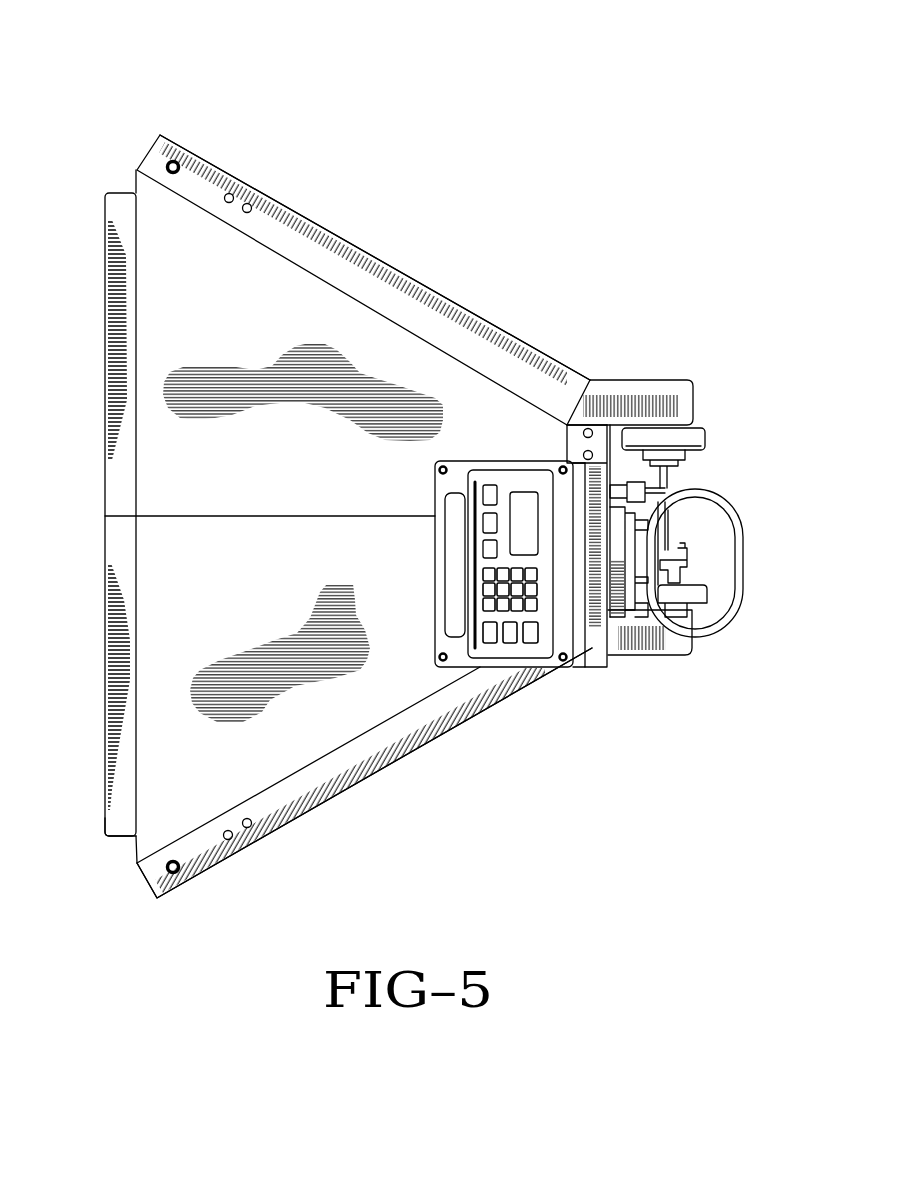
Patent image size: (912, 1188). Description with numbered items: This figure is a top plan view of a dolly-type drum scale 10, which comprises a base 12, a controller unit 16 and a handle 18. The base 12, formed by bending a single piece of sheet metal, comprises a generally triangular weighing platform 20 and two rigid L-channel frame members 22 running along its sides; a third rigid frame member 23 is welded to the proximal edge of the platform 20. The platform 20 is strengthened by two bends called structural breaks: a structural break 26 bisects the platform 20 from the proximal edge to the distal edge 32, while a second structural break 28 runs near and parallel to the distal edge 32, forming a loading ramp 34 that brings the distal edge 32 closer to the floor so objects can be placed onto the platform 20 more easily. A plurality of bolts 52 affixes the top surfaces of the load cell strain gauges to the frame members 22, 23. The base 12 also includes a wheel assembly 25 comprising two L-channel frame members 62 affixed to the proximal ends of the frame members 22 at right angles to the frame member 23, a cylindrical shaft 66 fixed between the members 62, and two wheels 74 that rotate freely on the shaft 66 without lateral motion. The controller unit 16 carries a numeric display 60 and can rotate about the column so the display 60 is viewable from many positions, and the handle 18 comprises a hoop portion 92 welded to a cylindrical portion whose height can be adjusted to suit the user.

The dolly-type drum scale 10 is at (86, 126).
The base 12 is at (397, 771).
The controller unit 16 is at (436, 485).
The handle 18 is at (750, 612).
The weighing platform 20 is at (195, 660).
The rigid frame members 22 is at (325, 256).
The third rigid frame member 23 is at (573, 444).
The wheel assembly 25 is at (628, 674).
The structural break 26 is at (193, 516).
The second structural break 28 is at (135, 583).
The distal edge 32 is at (108, 800).
The loading ramp 34 is at (120, 826).
The bolts 52 is at (393, 503).
The numeric display 60 is at (520, 511).
The L-channel frame members 62 is at (672, 550).
The cylindrical shaft 66 is at (668, 530).
The wheels 74 is at (711, 566).
The hoop portion 92 is at (745, 578).